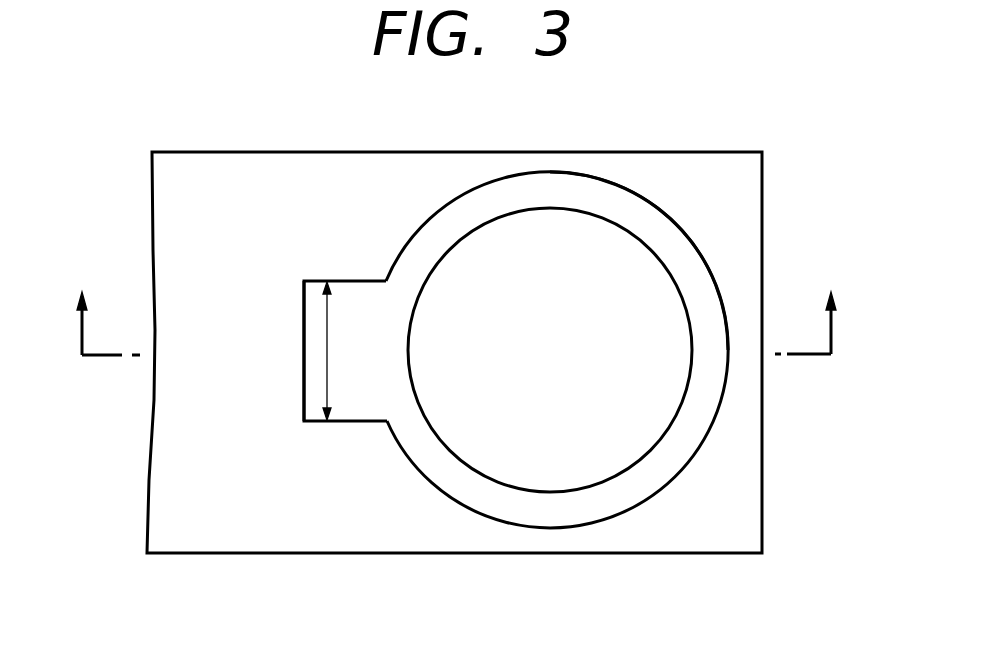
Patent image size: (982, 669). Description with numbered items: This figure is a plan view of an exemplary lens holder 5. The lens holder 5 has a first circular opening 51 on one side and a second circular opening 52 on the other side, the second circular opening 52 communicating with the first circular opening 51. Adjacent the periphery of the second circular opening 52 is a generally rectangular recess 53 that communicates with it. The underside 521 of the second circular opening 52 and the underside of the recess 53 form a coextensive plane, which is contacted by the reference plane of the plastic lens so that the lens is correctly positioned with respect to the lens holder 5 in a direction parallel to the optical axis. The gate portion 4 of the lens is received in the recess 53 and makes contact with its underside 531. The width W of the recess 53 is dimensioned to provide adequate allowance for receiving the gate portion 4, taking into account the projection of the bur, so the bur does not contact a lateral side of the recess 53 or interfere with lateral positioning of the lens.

The lens holder 5 is at (302, 533).
The first circular opening 51 is at (512, 490).
The second circular opening 52 is at (648, 500).
The underside of the second circular opening 521 is at (592, 200).
The recess 53 is at (304, 391).
The underside of the recess 531 is at (348, 320).
The width of the recess W is at (327, 353).
The gate portion 4 is at (456, 299).